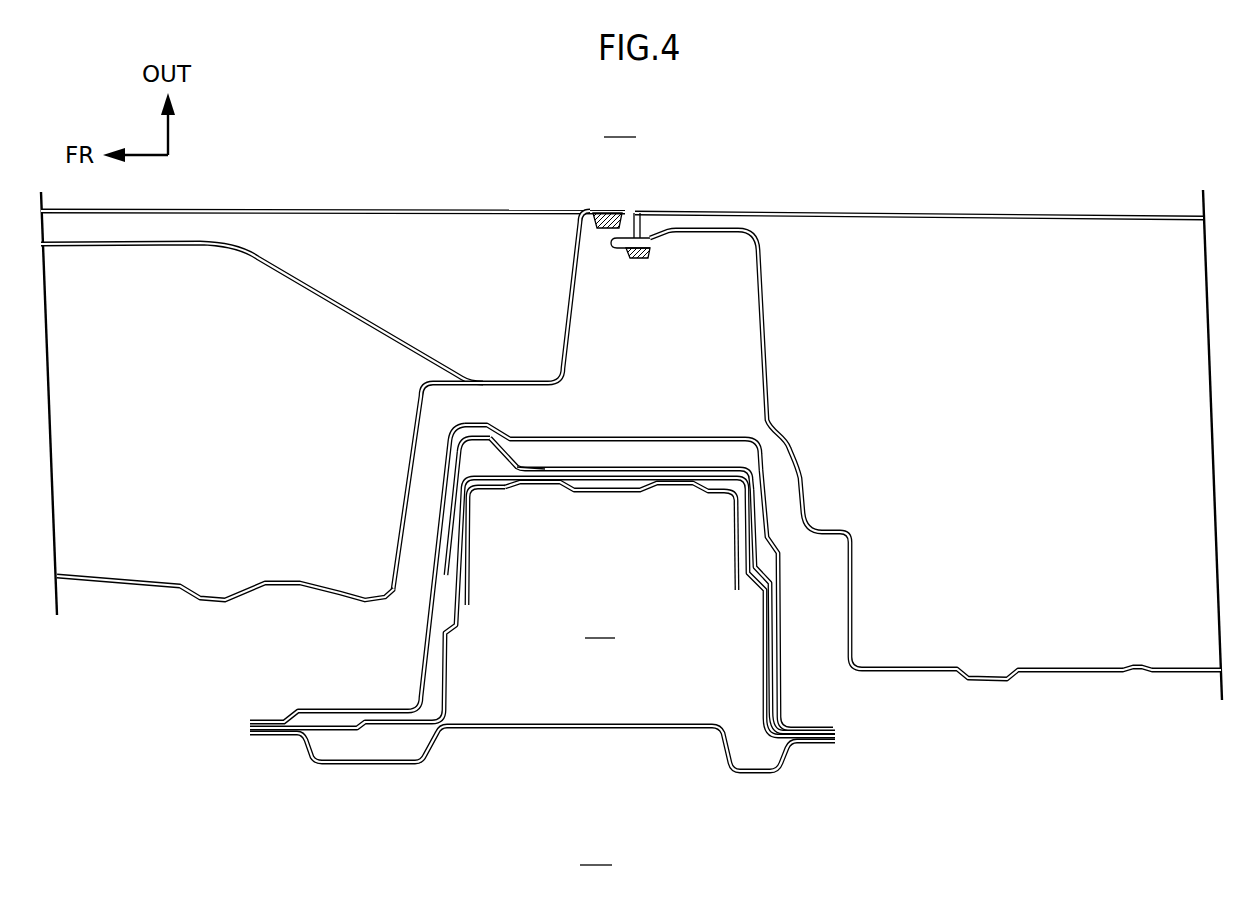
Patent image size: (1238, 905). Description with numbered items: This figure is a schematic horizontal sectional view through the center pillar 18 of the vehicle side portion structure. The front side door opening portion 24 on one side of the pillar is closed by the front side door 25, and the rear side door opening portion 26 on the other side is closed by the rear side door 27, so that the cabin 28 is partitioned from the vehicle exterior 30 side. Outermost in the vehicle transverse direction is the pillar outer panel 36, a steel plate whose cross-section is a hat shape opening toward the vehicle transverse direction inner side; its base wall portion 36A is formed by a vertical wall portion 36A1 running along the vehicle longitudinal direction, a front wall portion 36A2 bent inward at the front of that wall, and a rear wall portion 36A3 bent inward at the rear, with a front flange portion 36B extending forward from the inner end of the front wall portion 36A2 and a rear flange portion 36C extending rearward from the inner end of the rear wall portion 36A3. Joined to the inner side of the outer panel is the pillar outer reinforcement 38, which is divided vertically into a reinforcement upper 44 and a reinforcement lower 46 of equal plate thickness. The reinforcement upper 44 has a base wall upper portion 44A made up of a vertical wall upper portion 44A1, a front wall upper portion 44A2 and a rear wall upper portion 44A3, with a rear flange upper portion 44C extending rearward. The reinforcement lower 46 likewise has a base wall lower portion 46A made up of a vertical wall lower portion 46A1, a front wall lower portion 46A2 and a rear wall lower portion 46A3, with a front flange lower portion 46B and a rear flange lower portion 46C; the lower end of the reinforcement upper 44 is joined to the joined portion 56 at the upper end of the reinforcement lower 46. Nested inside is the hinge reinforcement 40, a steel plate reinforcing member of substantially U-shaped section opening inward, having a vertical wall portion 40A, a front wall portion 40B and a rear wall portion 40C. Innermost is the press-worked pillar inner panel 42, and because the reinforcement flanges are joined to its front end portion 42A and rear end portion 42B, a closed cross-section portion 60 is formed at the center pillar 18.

The center pillar 18 is at (693, 768).
The front side door opening portion 24 is at (136, 805).
The front side door 25 is at (291, 204).
The rear side door opening portion 26 is at (1022, 782).
The rear side door 27 is at (903, 207).
The cabin 28 is at (612, 865).
The vehicle exterior 30 is at (636, 137).
The pillar outer panel 36 is at (613, 526).
The base wall portion 36A is at (613, 543).
The vertical wall portion 36A1 is at (600, 437).
The front wall portion 36A2 is at (436, 523).
The rear wall portion 36A3 is at (780, 574).
The front flange portion 36B is at (268, 720).
The rear flange portion 36C is at (832, 726).
The pillar outer reinforcement 38 is at (577, 561).
The hinge reinforcement 40 is at (602, 562).
The vertical wall portion 40A is at (573, 488).
The front wall portion 40B is at (471, 580).
The rear wall portion 40C is at (734, 560).
The pillar inner panel 42 is at (542, 767).
The front end portion 42A is at (267, 736).
The rear end portion 42B is at (812, 745).
The reinforcement upper 44 is at (622, 547).
The base wall upper portion 44A is at (622, 545).
The vertical wall upper portion 44A1 is at (690, 467).
The front wall upper portion 44A2 is at (447, 566).
The rear wall upper portion 44A3 is at (781, 621).
The rear flange upper portion 44C is at (836, 733).
The reinforcement lower 46 is at (540, 596).
The base wall lower portion 46A is at (600, 607).
The vertical wall lower portion 46A1 is at (643, 486).
The front wall lower portion 46A2 is at (449, 662).
The rear wall lower portion 46A3 is at (768, 680).
The front flange lower portion 46B is at (250, 727).
The rear flange lower portion 46C is at (836, 738).
The joined portion 56 is at (541, 456).
The closed cross-section portion 60 is at (600, 624).